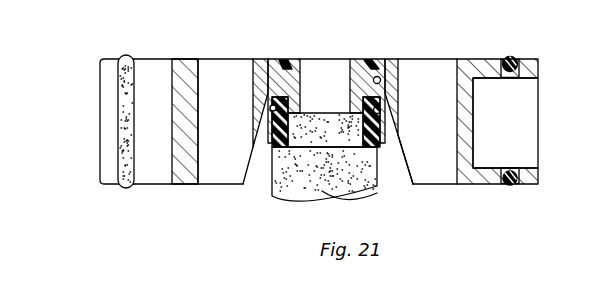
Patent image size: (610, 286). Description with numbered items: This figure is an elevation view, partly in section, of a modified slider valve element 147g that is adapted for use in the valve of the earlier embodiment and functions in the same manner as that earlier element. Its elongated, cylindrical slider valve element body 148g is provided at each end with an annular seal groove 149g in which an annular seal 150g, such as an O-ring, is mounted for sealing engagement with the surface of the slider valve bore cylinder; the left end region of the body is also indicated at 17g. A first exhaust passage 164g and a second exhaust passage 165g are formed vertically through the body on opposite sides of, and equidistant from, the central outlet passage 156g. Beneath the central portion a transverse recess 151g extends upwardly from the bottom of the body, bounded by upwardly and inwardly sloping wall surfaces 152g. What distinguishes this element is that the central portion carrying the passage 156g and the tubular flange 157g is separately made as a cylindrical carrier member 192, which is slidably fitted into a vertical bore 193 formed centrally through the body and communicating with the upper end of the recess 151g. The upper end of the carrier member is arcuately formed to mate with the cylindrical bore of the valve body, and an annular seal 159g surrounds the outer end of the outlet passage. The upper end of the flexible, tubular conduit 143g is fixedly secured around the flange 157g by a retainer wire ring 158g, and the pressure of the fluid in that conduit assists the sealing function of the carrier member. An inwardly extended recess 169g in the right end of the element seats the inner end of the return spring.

The housing 17g is at (100, 88).
The slider valve element body 148g is at (148, 76).
The annular seal groove 149g is at (121, 99).
The annular seal 150g is at (121, 140).
The slider valve element 147g is at (185, 42).
The first exhaust passage 164g is at (198, 84).
The sloping wall surfaces 152g is at (258, 170).
The outlet passage 156g is at (348, 78).
The annular seal 159g is at (287, 57).
The cylindrical carrier member 192 is at (383, 52).
The vertical bore 193 is at (381, 82).
The retainer wire ring 158g is at (381, 112).
The tubular flange 157g is at (291, 115).
The flexible tubular conduit 143g is at (292, 178).
The transverse recess 151g is at (389, 172).
The second exhaust passage 165g is at (458, 73).
The inwardly extended recess 169g is at (478, 151).